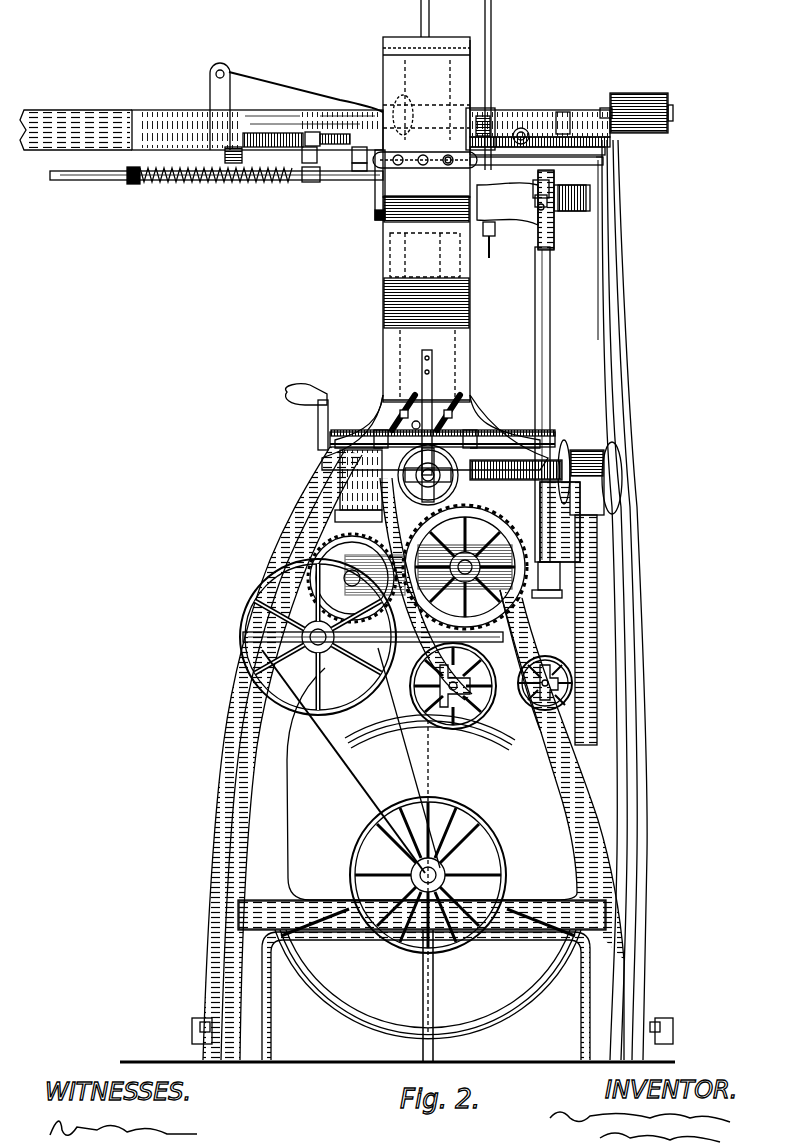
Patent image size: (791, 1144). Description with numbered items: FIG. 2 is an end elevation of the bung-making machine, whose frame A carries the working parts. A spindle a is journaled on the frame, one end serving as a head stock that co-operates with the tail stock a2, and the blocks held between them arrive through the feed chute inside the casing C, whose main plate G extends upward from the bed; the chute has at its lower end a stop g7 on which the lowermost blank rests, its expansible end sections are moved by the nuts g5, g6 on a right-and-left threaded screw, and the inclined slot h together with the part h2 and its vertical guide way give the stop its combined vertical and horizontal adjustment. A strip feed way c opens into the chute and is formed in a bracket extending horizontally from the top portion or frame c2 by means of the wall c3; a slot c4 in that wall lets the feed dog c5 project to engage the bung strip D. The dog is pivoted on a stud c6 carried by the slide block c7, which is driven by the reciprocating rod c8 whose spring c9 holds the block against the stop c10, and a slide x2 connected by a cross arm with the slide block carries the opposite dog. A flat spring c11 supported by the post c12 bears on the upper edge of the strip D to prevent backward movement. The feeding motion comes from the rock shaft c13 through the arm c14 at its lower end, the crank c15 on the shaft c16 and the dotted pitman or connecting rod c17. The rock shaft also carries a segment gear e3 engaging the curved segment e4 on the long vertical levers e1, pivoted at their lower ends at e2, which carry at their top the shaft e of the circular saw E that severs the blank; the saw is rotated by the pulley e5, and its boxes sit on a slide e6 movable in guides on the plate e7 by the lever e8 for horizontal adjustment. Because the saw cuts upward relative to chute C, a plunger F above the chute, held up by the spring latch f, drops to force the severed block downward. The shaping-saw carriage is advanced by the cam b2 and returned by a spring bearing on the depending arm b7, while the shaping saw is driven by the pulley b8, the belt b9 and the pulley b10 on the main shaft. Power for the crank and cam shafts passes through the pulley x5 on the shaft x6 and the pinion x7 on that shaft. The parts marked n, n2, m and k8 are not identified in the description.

The plunger F is at (430, 17).
The saw E is at (383, 77).
The casing C is at (383, 277).
The main plate G is at (440, 240).
The spring latch f is at (495, 73).
The link rollers n is at (403, 156).
The link roller n2 is at (448, 155).
The strip D is at (76, 130).
The wall c3 is at (257, 130).
The post c12 is at (211, 89).
The flat spring c11 is at (308, 97).
The slot c4 is at (262, 133).
The rod or stud c6 is at (312, 133).
The feed dog c5 is at (355, 145).
The slide block c7 is at (272, 154).
The top portion or frame c2 is at (195, 150).
The spring c9 is at (238, 182).
The slide x2 is at (290, 152).
The stop c10 is at (325, 182).
The reciprocating rod c8 is at (361, 172).
The strip feed way c is at (378, 217).
The shaft e is at (525, 118).
The plate e7 is at (498, 128).
The lever e8 is at (540, 130).
The slide e6 is at (568, 128).
The pulley e5 is at (648, 134).
The segment gear e3 is at (560, 212).
The segment gear e4 is at (594, 212).
The long vertical levers e1 is at (620, 266).
The pivot e2 is at (192, 1027).
The rock shaft c13 is at (535, 320).
The nut g5 is at (380, 432).
The nut g6 is at (478, 433).
The stop g7 is at (458, 440).
The slotted bar m is at (432, 412).
The slot h is at (407, 410).
The part h2 is at (455, 412).
The spindle a is at (400, 476).
The tail stock a2 is at (468, 478).
The arm b7 is at (515, 474).
The pulley b8 is at (572, 452).
The belt b9 is at (592, 503).
The arm c14 is at (560, 588).
The pitman or connecting rod c17 is at (522, 602).
The pinion k8 is at (333, 556).
The shaft c16 is at (318, 637).
The shaft x6 is at (310, 640).
The crank c15 is at (336, 656).
The pulley x5 is at (302, 732).
The frame A is at (530, 760).
The pulley b10 is at (330, 985).
The pinion x7 is at (445, 868).
The cam b2 is at (428, 880).